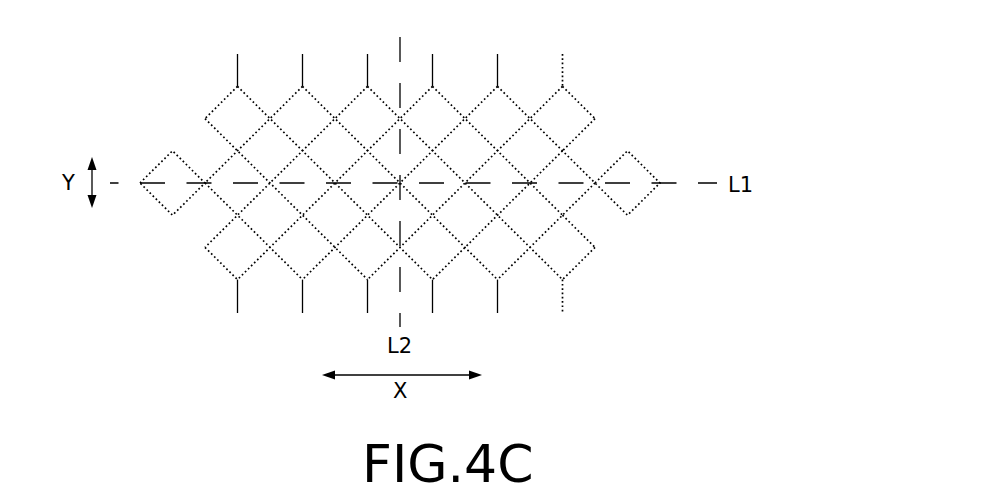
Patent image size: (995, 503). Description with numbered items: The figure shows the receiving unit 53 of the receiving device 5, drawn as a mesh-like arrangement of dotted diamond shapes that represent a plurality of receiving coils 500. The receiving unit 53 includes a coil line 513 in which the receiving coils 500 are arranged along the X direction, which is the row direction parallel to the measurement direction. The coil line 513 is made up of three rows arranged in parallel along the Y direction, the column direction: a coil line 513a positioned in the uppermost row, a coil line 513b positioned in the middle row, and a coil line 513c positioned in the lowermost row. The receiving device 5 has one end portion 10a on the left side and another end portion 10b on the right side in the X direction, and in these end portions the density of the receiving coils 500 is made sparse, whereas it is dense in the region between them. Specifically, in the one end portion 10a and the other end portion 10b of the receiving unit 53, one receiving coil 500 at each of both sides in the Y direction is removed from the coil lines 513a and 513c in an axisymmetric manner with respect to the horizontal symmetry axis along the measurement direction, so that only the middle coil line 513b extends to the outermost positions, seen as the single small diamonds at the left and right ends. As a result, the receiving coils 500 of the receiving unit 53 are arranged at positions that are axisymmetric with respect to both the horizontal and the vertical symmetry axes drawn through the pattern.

The receiving coil 500 is at (190, 156).
The receiving unit 53 is at (609, 59).
The receiving device 5 is at (626, 47).
The coil line 513 is at (683, 175).
The coil line 513a is at (609, 100).
The coil line 513b is at (668, 160).
The coil line 513c is at (612, 258).
The one end portion 10a is at (166, 296).
The other end portion 10b is at (659, 313).